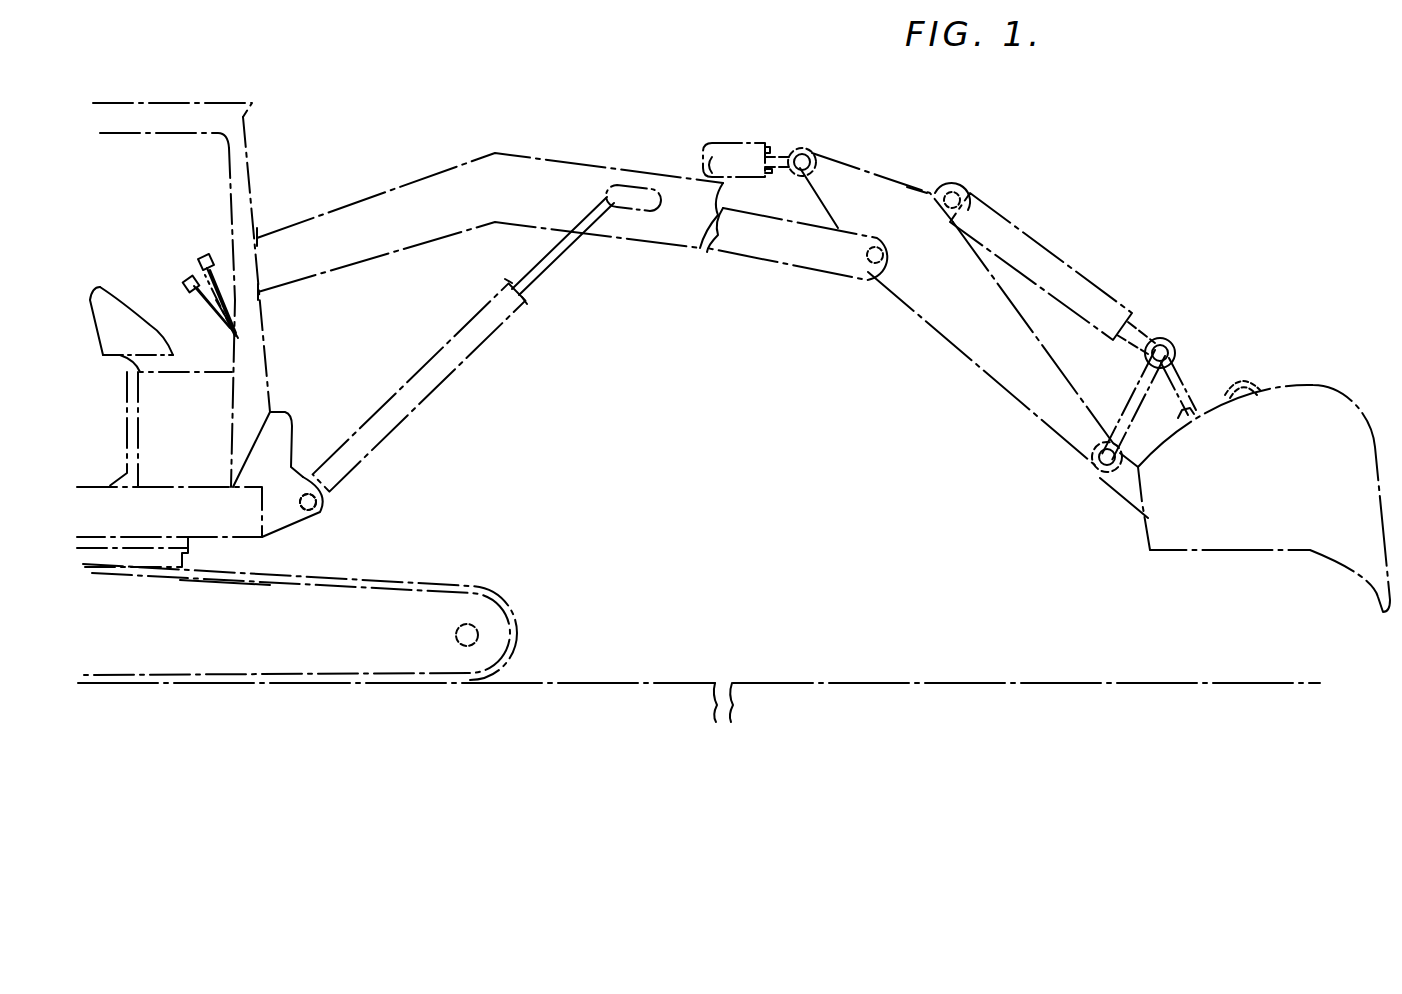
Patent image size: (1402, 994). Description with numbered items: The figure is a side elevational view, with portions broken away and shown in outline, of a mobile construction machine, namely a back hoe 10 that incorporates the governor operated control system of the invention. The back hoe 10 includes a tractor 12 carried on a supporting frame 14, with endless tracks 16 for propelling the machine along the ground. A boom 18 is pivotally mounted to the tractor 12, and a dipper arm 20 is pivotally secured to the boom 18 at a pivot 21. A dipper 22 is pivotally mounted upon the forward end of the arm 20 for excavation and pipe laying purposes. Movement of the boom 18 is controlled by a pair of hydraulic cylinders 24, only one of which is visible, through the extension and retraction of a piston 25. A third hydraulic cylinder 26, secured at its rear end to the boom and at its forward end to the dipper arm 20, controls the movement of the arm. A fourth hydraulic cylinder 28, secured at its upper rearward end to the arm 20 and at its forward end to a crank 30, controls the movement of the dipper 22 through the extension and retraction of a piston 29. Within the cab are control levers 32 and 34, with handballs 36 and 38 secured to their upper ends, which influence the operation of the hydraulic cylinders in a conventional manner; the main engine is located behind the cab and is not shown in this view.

The back hoe 10 is at (262, 197).
The tractor 12 is at (257, 380).
The supporting frame 14 is at (199, 513).
The endless tracks 16 is at (432, 612).
The boom 18 is at (543, 167).
The dipper arm 20 is at (880, 197).
The pivot pin 21 is at (788, 150).
The dipper 22 is at (1272, 403).
The hydraulic cylinders 24 is at (457, 350).
The piston 25 is at (562, 247).
The third hydraulic cylinder 26 is at (732, 150).
The fourth hydraulic cylinder 28 is at (1047, 275).
The piston 29 is at (1133, 337).
The crank 30 is at (1185, 387).
The control lever 32 is at (213, 320).
The control lever 34 is at (218, 283).
The handball 36 is at (188, 276).
The handball 38 is at (207, 243).